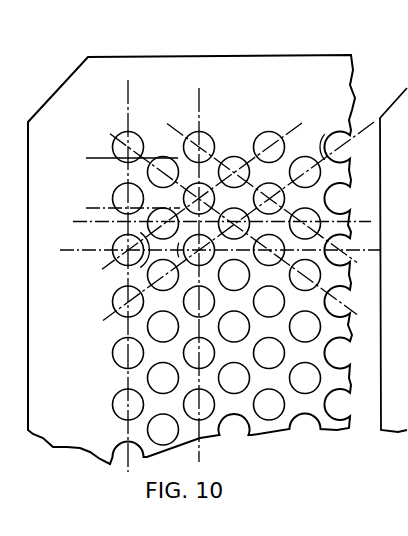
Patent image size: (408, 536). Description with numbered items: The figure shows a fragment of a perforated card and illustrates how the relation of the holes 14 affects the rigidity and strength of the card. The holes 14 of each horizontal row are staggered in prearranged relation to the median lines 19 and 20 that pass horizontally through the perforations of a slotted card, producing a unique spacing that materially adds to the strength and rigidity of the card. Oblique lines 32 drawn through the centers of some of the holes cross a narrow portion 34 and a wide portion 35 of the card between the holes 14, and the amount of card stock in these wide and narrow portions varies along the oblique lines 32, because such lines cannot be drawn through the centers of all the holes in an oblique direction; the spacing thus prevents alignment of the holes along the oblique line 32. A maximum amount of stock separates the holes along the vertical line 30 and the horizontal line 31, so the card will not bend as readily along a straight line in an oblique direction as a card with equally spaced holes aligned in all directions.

The holes 14 is at (232, 158).
The median line 19 is at (98, 157).
The median line 20 is at (100, 207).
The vertical line 30 is at (126, 103).
The horizontal line 31 is at (112, 223).
The oblique line 32 is at (112, 133).
The narrow portion 34 is at (321, 134).
The wide portion 35 is at (279, 188).